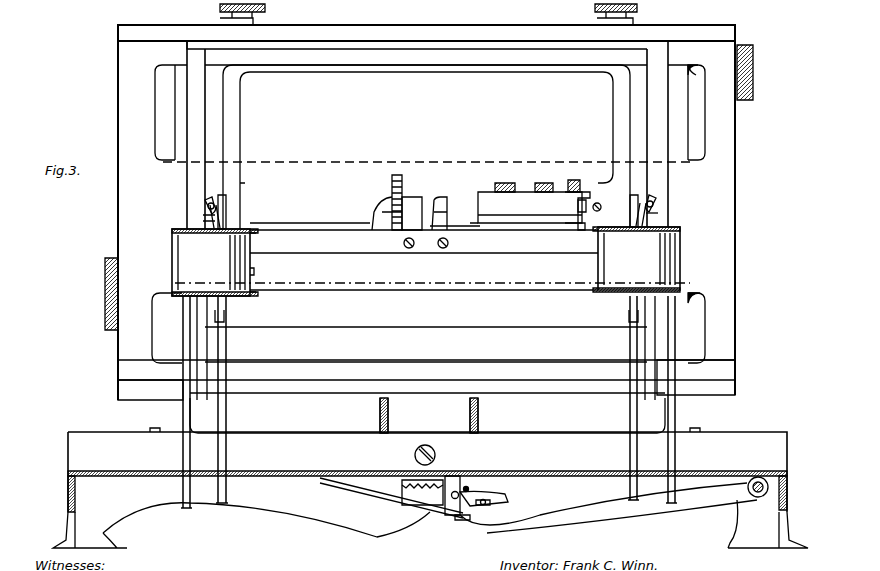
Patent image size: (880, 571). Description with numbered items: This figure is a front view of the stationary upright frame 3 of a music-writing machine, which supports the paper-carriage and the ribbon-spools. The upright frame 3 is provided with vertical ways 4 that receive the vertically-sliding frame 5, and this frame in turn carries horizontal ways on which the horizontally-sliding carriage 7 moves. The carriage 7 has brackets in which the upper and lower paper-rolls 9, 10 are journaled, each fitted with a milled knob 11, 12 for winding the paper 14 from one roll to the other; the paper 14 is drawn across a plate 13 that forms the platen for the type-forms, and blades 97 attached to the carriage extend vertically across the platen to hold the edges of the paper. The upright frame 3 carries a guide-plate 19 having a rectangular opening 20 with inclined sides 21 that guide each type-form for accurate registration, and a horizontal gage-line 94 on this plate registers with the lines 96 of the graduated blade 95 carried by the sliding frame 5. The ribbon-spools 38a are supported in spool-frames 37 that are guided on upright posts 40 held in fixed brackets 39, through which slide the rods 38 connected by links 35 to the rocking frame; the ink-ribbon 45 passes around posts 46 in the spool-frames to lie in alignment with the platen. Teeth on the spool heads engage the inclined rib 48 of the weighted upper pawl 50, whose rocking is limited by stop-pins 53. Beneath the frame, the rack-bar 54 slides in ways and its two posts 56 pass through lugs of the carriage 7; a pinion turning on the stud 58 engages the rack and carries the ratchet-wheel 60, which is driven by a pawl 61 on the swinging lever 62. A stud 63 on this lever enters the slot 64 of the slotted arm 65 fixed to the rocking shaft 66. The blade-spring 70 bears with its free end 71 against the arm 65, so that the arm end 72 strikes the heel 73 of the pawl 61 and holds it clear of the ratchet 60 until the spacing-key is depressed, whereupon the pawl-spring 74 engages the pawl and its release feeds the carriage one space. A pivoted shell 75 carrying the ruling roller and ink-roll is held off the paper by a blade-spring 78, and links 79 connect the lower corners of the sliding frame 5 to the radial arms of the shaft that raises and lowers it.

The stationary upright frame 3 is at (233, 128).
The vertical ways 4 is at (203, 45).
The vertically-sliding frame 5 is at (193, 153).
The horizontally-sliding carriage 7 is at (118, 103).
The upper paper-roll 9 is at (698, 78).
The lower paper-roll 10 is at (170, 322).
The milled knob 11 is at (105, 272).
The milled knob 12 is at (753, 57).
The plate (platen) 13 is at (684, 164).
The paper 14 is at (170, 130).
The guide-plate 19 is at (386, 228).
The rectangular opening 20 is at (444, 200).
The inclined sides 21 is at (380, 222).
The links 35 is at (615, 265).
The spool-frames 37 is at (190, 297).
The rods 38 is at (250, 271).
The ribbon-spools 38a is at (256, 233).
The fixed brackets 39 is at (202, 300).
The upright posts 40 is at (228, 212).
The ink-ribbon 45 is at (185, 261).
The posts 46 is at (172, 232).
The inclined rib 48 is at (205, 204).
The upper pawl 50 is at (205, 217).
The stop-pins 53 is at (213, 236).
The rack-bar 54 is at (310, 430).
The posts 56 is at (378, 410).
The stud 58 is at (415, 455).
The ratchet-wheel 60 is at (410, 487).
The pawl 61 is at (462, 480).
The swinging lever 62 is at (412, 498).
The stud 63 is at (496, 497).
The slot 64 is at (485, 506).
The slotted arm 65 is at (606, 520).
The rocking shaft 66 is at (755, 500).
The blade-spring 70 is at (355, 488).
The free end 71 is at (460, 518).
The end of slotted arm 72 is at (452, 515).
The heel 73 is at (438, 513).
The pawl-spring 74 is at (469, 489).
The shell or case 75 is at (525, 218).
The blade-spring 78 is at (576, 207).
The links 79 is at (183, 414).
The horizontal gage-line 94 is at (412, 205).
The graduated blade 95 is at (397, 175).
The lines 96 is at (392, 195).
The blades 97 is at (240, 92).